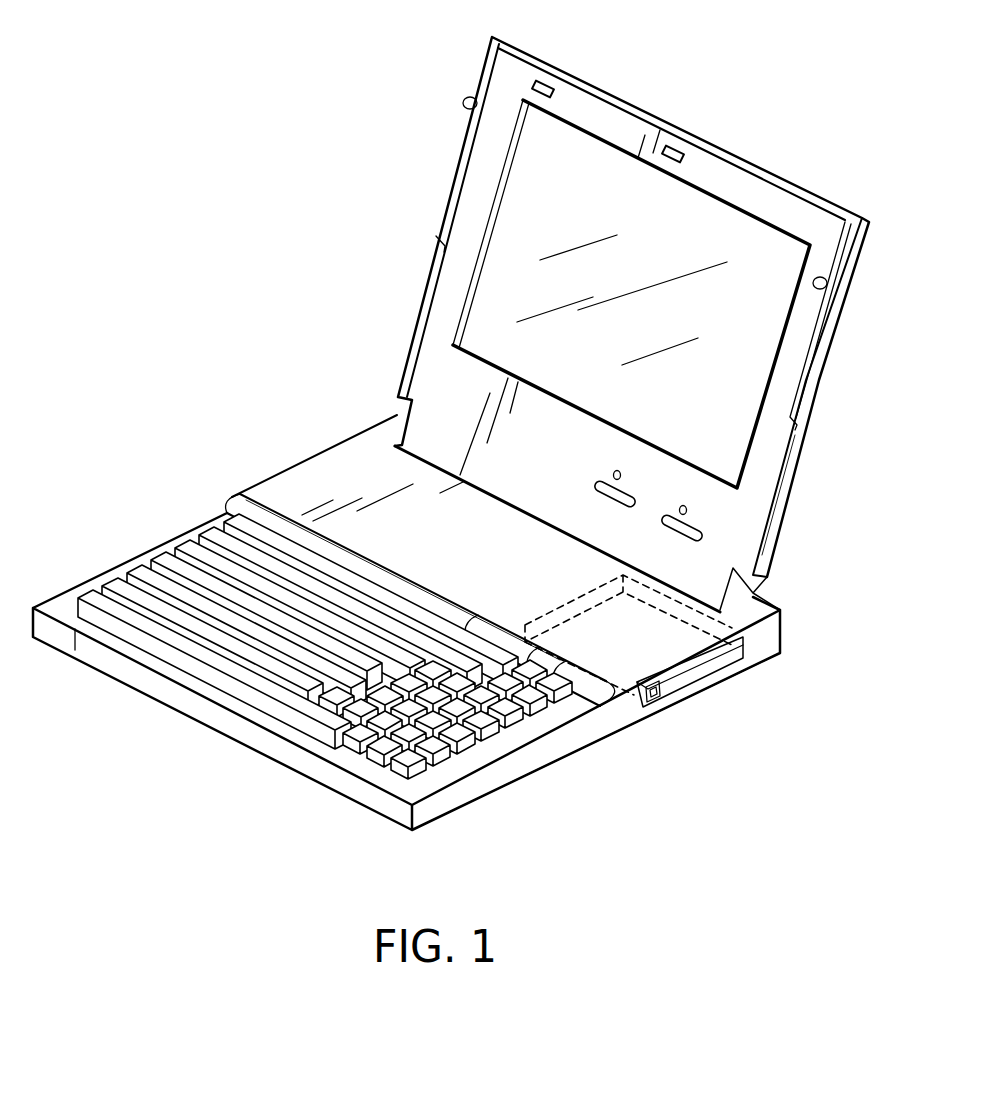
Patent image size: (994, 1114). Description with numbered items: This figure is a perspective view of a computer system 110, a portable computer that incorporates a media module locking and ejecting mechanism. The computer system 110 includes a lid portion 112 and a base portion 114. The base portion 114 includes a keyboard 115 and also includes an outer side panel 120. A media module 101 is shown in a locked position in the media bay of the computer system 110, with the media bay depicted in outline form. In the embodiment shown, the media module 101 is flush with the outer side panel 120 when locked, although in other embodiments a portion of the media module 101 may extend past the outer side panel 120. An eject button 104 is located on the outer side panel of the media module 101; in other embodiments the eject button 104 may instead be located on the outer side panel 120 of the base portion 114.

The media module 101 is at (693, 671).
The eject button 104 is at (666, 701).
The computer system 110 is at (273, 450).
The lid portion 112 is at (490, 183).
The base portion 114 is at (137, 555).
The keyboard 115 is at (272, 653).
The outer side panel 120 is at (575, 738).